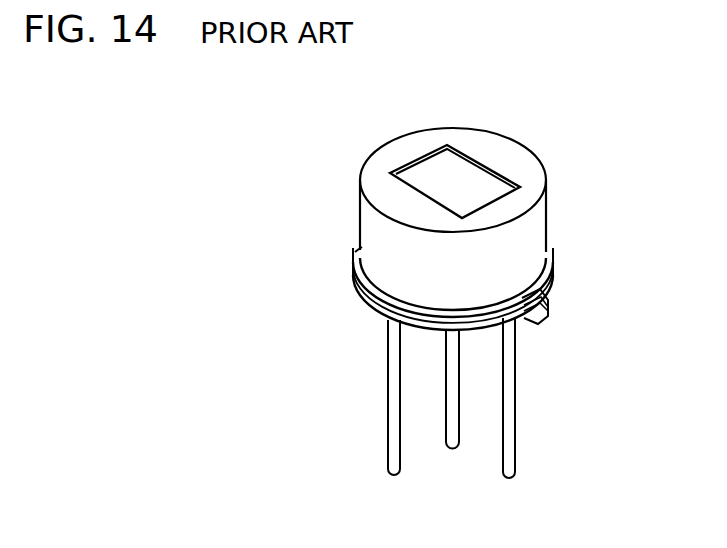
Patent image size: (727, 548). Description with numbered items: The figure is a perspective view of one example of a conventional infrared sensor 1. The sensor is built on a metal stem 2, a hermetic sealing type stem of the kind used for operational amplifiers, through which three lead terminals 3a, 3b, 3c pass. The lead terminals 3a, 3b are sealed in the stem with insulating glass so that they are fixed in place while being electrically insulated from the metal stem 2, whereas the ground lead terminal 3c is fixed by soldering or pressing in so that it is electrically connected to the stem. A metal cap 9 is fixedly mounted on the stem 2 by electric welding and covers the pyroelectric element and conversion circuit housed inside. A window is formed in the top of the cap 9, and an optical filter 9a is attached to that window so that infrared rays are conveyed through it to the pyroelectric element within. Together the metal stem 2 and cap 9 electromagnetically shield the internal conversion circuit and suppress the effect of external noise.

The infrared sensor 1 is at (268, 107).
The metal cap 9 is at (522, 239).
The optical filter 9a is at (472, 180).
The metal stem 2 is at (378, 309).
The lead terminal 3a is at (517, 421).
The lead terminal 3b is at (452, 428).
The ground lead terminal 3c is at (388, 418).